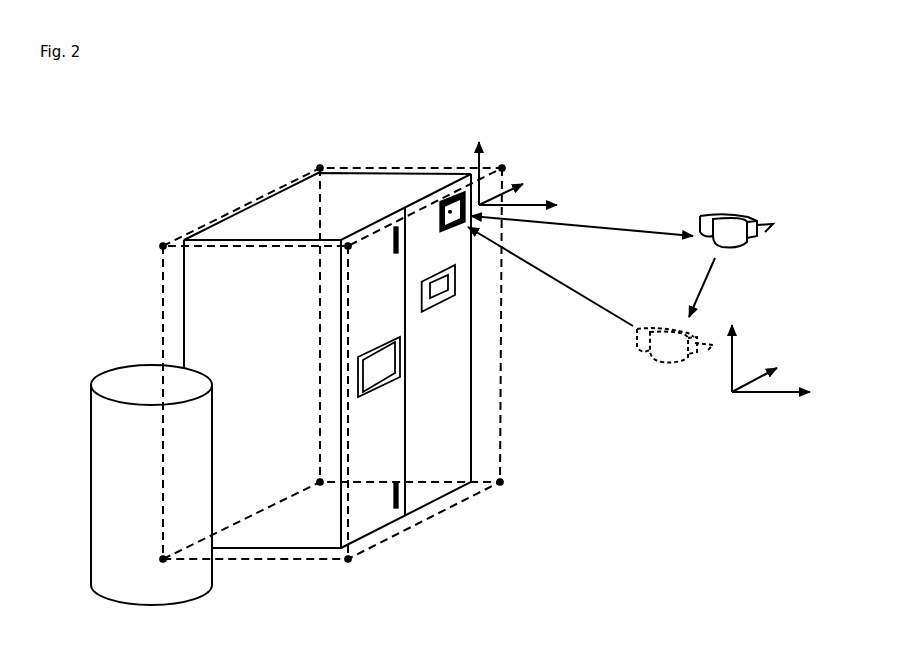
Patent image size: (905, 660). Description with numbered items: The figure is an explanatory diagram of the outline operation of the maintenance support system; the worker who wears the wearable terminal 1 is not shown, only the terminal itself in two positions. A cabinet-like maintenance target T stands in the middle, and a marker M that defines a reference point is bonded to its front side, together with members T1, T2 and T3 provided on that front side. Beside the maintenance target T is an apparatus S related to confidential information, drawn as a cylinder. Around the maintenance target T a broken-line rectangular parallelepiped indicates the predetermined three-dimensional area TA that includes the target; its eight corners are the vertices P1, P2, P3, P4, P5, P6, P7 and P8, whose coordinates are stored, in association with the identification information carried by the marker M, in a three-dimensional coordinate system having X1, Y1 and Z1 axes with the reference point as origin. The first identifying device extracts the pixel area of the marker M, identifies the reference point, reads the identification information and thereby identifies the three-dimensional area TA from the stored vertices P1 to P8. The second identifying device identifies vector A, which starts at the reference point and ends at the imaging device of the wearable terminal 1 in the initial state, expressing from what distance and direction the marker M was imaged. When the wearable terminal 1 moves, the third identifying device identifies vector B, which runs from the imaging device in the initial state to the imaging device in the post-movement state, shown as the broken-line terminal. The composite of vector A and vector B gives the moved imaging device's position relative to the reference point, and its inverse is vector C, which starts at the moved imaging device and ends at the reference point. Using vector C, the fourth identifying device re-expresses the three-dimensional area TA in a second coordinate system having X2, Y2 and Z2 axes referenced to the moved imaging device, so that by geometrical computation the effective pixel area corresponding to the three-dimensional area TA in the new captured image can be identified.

The wearable terminal 1 is at (700, 228).
The maintenance target T is at (354, 188).
The three-dimensional area TA is at (247, 203).
The member T1 is at (395, 242).
The member T2 is at (437, 300).
The member T3 is at (377, 377).
The marker M is at (447, 234).
The apparatus related to confidential information S is at (105, 460).
The vertex of the three-dimensional area P1 is at (358, 256).
The vertex of the three-dimensional area P2 is at (510, 158).
The vertex of the three-dimensional area P3 is at (316, 158).
The vertex of the three-dimensional area P4 is at (148, 256).
The vertex of the three-dimensional area P5 is at (358, 570).
The vertex of the three-dimensional area P6 is at (513, 487).
The vertex of the three-dimensional area P7 is at (306, 477).
The vertex of the three-dimensional area P8 is at (155, 570).
The vector A is at (582, 236).
The vector B is at (705, 287).
The inverse vector C is at (550, 276).
The X1 axis X1 is at (529, 210).
The Y1 axis Y1 is at (513, 188).
The Z1 axis Z1 is at (478, 161).
The X2 axis X2 is at (782, 395).
The Y2 axis Y2 is at (765, 375).
The Z2 axis Z2 is at (730, 348).